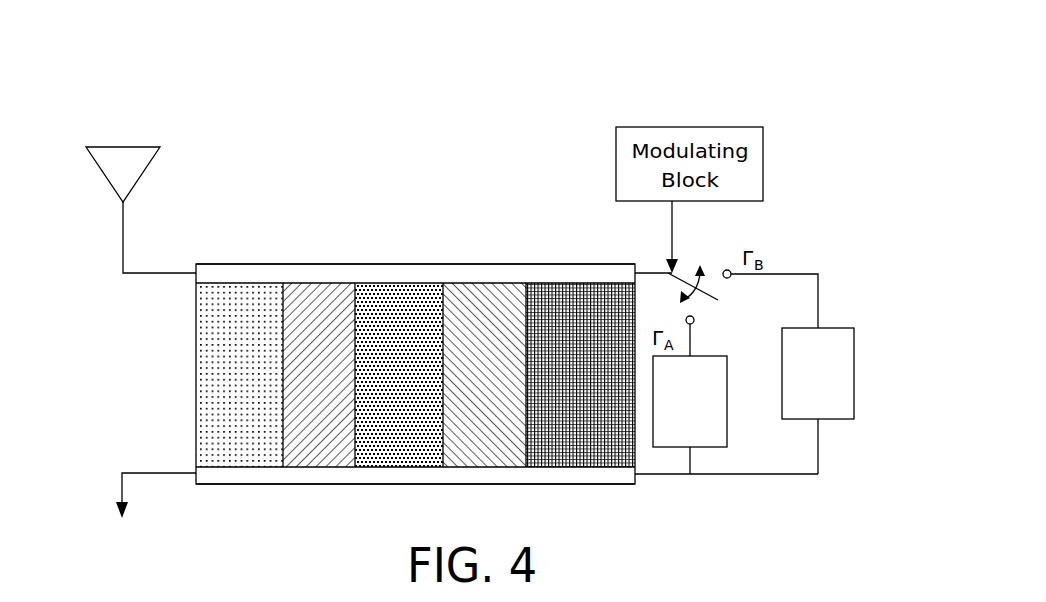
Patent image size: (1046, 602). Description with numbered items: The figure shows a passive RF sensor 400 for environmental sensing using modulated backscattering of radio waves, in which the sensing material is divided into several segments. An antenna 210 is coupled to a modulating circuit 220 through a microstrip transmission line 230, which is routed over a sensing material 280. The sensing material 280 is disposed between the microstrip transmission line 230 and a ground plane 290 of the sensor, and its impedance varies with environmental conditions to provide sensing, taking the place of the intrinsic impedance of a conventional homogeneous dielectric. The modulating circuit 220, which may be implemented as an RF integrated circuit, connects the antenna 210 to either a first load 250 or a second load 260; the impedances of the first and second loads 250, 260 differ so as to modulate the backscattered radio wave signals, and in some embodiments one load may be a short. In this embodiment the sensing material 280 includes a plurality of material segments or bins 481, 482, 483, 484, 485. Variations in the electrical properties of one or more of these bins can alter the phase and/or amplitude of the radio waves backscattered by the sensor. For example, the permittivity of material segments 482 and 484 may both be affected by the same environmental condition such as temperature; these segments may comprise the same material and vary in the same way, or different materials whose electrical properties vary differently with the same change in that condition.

The passive RF sensor 400 is at (395, 103).
The antenna 210 is at (124, 147).
The modulating circuit 220 is at (589, 233).
The microstrip transmission line 230 is at (416, 264).
The ground plane 290 is at (352, 485).
The sensing material 280 is at (168, 383).
The material segment 481 is at (220, 378).
The material segment 482 is at (298, 378).
The material segment 483 is at (378, 378).
The material segment 484 is at (463, 378).
The material segment 485 is at (559, 378).
The second load 260 is at (728, 398).
The first load 250 is at (782, 385).